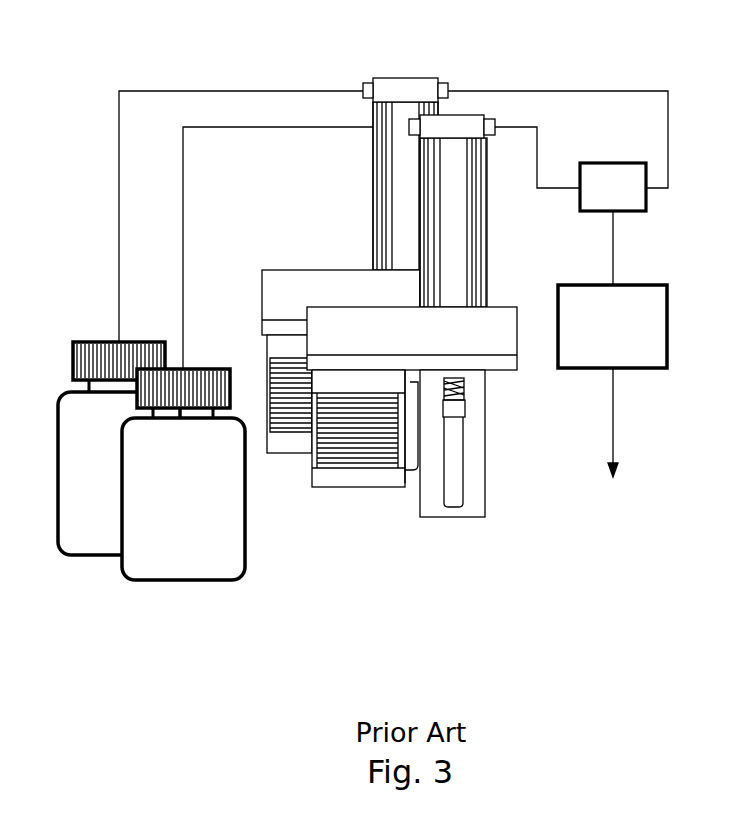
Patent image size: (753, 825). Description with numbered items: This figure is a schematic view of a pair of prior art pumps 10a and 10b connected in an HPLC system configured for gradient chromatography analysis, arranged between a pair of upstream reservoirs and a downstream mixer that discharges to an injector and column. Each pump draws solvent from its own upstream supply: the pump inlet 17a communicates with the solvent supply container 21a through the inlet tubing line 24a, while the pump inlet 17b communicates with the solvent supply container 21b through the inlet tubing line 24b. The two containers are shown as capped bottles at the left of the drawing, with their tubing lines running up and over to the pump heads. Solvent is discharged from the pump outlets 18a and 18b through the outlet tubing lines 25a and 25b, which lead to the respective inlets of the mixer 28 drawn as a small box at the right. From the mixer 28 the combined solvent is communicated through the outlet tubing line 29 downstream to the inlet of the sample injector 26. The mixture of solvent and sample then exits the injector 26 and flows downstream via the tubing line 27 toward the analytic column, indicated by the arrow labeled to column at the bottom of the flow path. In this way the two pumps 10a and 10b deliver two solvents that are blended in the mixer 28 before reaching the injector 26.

The pump 10a is at (506, 227).
The pump 10b is at (312, 212).
The pump inlet 17a is at (413, 122).
The pump inlet 17b is at (370, 93).
The pump outlet 18a is at (490, 128).
The pump outlet 18b is at (443, 91).
The solvent supply container 21a is at (180, 550).
The solvent supply container 21b is at (92, 525).
The inlet tubing line 24a is at (183, 208).
The inlet tubing line 24b is at (119, 157).
The outlet tubing line 25a is at (538, 162).
The outlet tubing line 25b is at (617, 91).
The sample injector 26 is at (648, 353).
The tubing line 27 is at (613, 425).
The mixer 28 is at (620, 193).
The outlet tubing line 29 is at (613, 247).